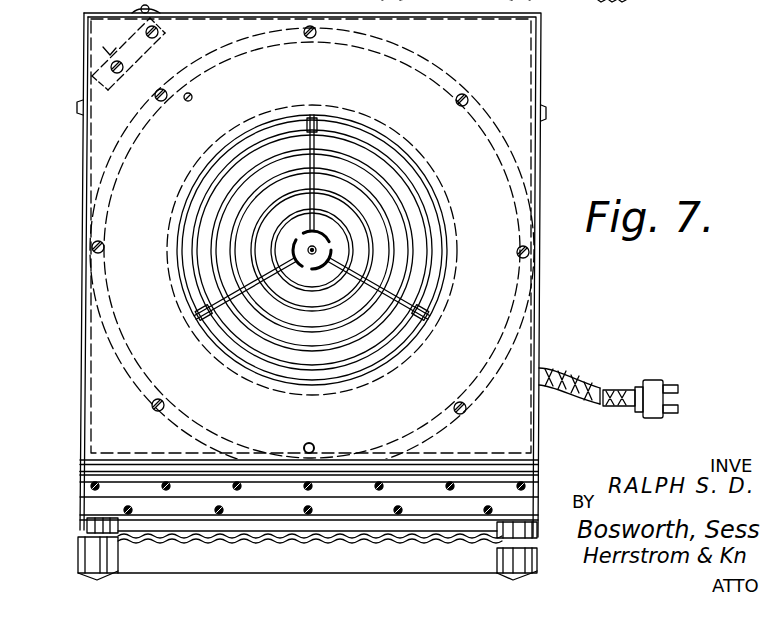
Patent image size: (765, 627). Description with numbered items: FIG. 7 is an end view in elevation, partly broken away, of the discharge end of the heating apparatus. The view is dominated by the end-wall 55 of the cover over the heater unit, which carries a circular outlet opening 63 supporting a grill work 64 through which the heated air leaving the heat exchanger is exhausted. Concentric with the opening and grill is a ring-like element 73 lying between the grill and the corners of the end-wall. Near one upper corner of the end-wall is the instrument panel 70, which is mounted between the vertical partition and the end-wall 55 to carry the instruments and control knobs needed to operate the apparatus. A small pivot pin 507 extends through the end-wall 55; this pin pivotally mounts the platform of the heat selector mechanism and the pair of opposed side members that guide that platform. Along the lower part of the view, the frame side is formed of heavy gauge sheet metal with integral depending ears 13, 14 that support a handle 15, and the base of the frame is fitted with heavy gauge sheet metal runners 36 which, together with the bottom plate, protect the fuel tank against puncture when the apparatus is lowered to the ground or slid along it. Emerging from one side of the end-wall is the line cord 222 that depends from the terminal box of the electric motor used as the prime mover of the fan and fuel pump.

The depending ear 13 is at (80, 488).
The depending ear 14 is at (538, 488).
The handle 15 is at (450, 467).
The runner 36 is at (97, 576).
The end-wall 55 is at (510, 78).
The circular outlet opening 63 is at (332, 250).
The grill work 64 is at (398, 195).
The instrument panel 70 is at (95, 50).
The gasket ring 73 is at (507, 143).
The line cord 222 is at (573, 381).
The pivot pin 507 is at (193, 96).